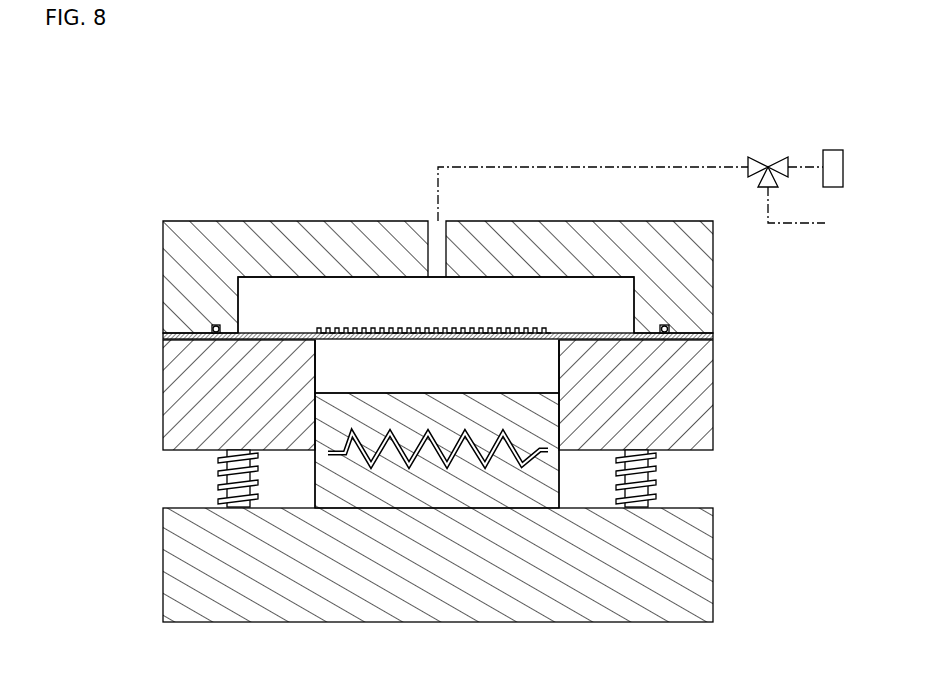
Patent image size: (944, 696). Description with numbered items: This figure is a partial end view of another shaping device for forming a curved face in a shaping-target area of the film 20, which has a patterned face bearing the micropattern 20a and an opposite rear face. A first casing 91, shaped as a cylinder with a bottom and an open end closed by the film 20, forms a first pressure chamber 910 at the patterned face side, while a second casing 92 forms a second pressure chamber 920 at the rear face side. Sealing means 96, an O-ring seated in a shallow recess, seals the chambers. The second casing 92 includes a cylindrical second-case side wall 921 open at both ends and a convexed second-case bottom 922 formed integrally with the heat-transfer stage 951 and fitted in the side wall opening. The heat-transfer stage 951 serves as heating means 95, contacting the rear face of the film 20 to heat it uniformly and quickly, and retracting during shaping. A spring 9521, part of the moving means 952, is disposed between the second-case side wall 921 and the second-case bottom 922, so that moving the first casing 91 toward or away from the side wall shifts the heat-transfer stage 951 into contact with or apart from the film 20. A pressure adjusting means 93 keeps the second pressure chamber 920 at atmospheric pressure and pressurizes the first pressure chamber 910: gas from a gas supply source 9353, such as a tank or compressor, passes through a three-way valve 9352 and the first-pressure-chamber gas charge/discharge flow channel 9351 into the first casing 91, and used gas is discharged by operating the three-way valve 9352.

The first casing 91 is at (180, 273).
The first pressure chamber 910 is at (398, 320).
The sealing means 96 is at (668, 327).
The film 20 is at (278, 332).
The micropattern 20a is at (347, 328).
The pressure adjusting means 93 is at (659, 133).
The first-pressure-chamber gas charge/discharge flow channel 9351 is at (563, 167).
The three-way valve 9352 is at (760, 157).
The gas supply source 9353 is at (833, 165).
The second casing 92 is at (507, 481).
The second-case side wall 921 is at (692, 410).
The second-case bottom 922 is at (692, 540).
The second pressure chamber 920 is at (510, 372).
The heat-transfer stage 951 is at (370, 394).
The moving means 952 is at (539, 478).
The spring 9521 is at (655, 478).
The heating means 95 is at (447, 463).